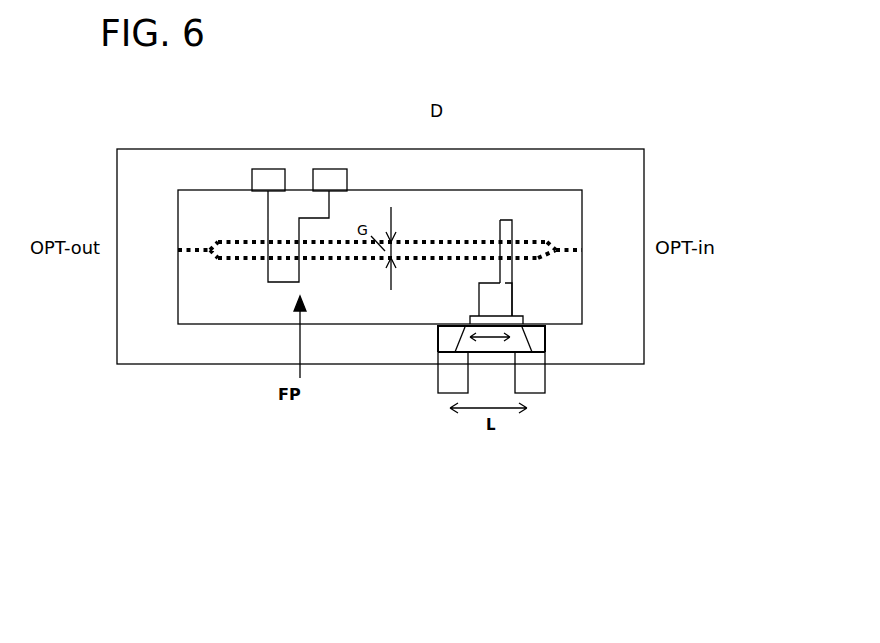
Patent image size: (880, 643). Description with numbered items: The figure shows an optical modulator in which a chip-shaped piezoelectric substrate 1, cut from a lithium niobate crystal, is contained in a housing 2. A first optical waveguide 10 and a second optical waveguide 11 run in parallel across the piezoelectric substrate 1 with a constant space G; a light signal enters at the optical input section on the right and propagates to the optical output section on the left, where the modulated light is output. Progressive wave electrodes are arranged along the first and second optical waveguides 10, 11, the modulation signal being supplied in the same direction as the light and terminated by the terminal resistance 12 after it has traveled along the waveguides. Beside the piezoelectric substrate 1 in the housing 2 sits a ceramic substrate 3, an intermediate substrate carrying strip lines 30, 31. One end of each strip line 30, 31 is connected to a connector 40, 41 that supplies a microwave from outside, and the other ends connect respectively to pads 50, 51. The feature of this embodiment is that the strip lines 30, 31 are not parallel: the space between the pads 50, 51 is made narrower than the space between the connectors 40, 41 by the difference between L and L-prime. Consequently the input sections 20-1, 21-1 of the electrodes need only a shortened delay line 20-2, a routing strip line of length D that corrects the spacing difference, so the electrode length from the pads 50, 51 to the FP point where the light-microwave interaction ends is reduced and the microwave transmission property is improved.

The piezoelectric substrate 1 is at (192, 307).
The housing 2 is at (202, 364).
The ceramic substrate 3 is at (445, 338).
The first optical waveguide 10 is at (243, 247).
The second optical waveguide 11 is at (215, 245).
The terminal resistance 12 is at (327, 173).
The input section of first progressive wave electrode 20-1 is at (498, 277).
The delay line 20-2 is at (488, 282).
The input section of second progressive wave electrode 21-1 is at (512, 283).
The first strip line 30 is at (480, 353).
The second strip line 31 is at (530, 343).
The first connector 40 is at (452, 395).
The second connector 41 is at (528, 388).
The first pad 50 is at (470, 316).
The second pad 51 is at (527, 316).